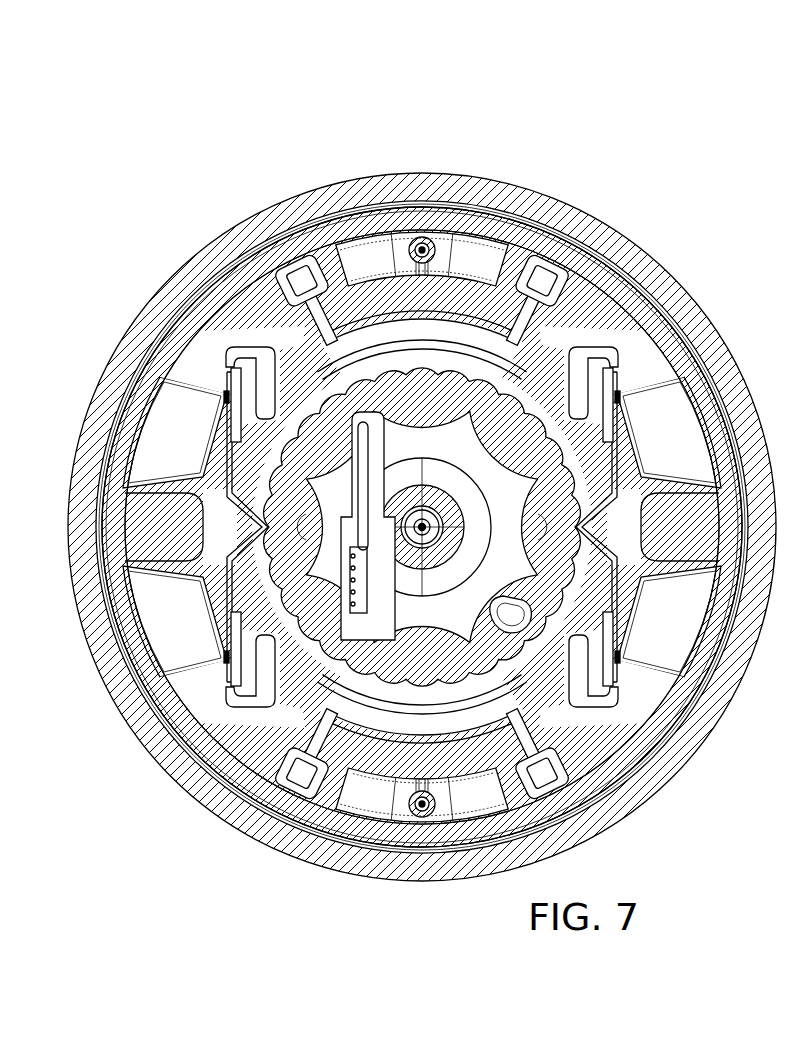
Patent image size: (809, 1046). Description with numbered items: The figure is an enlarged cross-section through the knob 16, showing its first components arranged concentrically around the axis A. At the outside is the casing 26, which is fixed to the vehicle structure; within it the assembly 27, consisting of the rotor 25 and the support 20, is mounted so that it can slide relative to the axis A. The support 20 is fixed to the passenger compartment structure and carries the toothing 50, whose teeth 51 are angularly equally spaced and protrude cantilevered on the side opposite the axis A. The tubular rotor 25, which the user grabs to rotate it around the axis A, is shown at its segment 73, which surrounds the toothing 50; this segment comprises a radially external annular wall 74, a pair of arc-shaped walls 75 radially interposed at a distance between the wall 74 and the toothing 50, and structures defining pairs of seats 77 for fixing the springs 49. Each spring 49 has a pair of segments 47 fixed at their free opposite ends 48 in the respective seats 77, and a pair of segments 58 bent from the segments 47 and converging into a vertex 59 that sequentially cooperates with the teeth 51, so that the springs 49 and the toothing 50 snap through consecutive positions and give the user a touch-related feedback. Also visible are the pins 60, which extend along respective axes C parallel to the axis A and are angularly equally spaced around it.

The knob 16 is at (578, 187).
The support 20 is at (472, 450).
The rotor 25 is at (702, 314).
The casing 26 is at (667, 262).
The assembly 27 is at (724, 246).
The segments 47 is at (200, 470).
The free opposite ends 48 is at (223, 394).
The springs 49 is at (228, 529).
The toothing 50 is at (472, 340).
The teeth 51 is at (428, 362).
The segments 58 is at (297, 492).
The vertex 59 is at (297, 502).
The pins 60 is at (429, 240).
The segment 73 is at (735, 612).
The radially external annular wall 74 is at (152, 360).
The arc-shaped walls 75 is at (292, 434).
The seats 77 is at (258, 418).
The axis A is at (436, 520).
The axes C is at (412, 236).